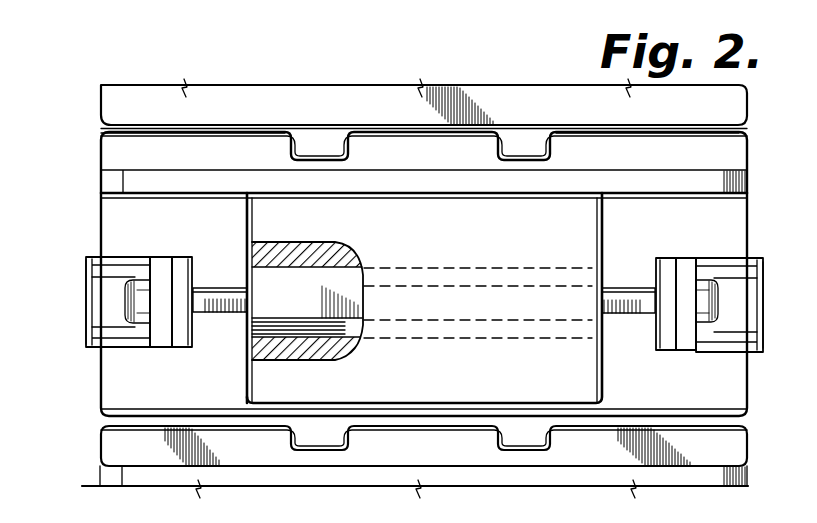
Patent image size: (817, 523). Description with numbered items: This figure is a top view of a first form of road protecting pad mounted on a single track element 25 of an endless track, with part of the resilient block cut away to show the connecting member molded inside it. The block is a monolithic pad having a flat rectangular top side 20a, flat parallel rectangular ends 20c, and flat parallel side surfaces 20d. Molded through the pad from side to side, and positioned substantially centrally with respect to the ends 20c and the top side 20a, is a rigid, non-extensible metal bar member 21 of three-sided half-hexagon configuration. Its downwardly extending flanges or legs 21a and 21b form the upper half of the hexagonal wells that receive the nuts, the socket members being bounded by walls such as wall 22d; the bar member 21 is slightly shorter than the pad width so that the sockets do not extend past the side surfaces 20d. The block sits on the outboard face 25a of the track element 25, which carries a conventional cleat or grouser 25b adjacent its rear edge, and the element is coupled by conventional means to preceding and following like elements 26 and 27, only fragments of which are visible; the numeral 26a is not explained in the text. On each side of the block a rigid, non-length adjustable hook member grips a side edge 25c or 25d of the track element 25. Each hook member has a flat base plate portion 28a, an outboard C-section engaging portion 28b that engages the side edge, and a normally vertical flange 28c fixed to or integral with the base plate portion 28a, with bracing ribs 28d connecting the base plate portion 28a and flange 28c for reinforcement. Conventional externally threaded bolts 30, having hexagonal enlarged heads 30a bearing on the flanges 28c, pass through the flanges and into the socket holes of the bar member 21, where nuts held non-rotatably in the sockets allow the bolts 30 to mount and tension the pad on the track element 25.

The top side of pad 20a is at (247, 223).
The end of pad 20c is at (446, 196).
The side surface of pad 20d is at (247, 391).
The bar member 21 is at (396, 309).
The leg of half hexagon member 21a is at (337, 277).
The leg of half hexagon member 21b is at (340, 340).
The wall of socket member 22d is at (248, 326).
The track element 25 is at (748, 166).
The outboard face of track element 25a is at (748, 408).
The cleat or grouser 25b is at (570, 180).
The side edge of track element 25c is at (100, 391).
The side edge of track element 25d is at (748, 384).
The track element 26 is at (749, 453).
The bottom plate portion 26a is at (610, 456).
The track element 27 is at (748, 112).
The base plate portion 28a is at (86, 287).
The C-section engaging portion 28b is at (764, 311).
The flange 28c is at (162, 348).
The bracing rib 28d is at (115, 268).
The bolt 30 is at (236, 296).
The bolt head 30a is at (135, 300).